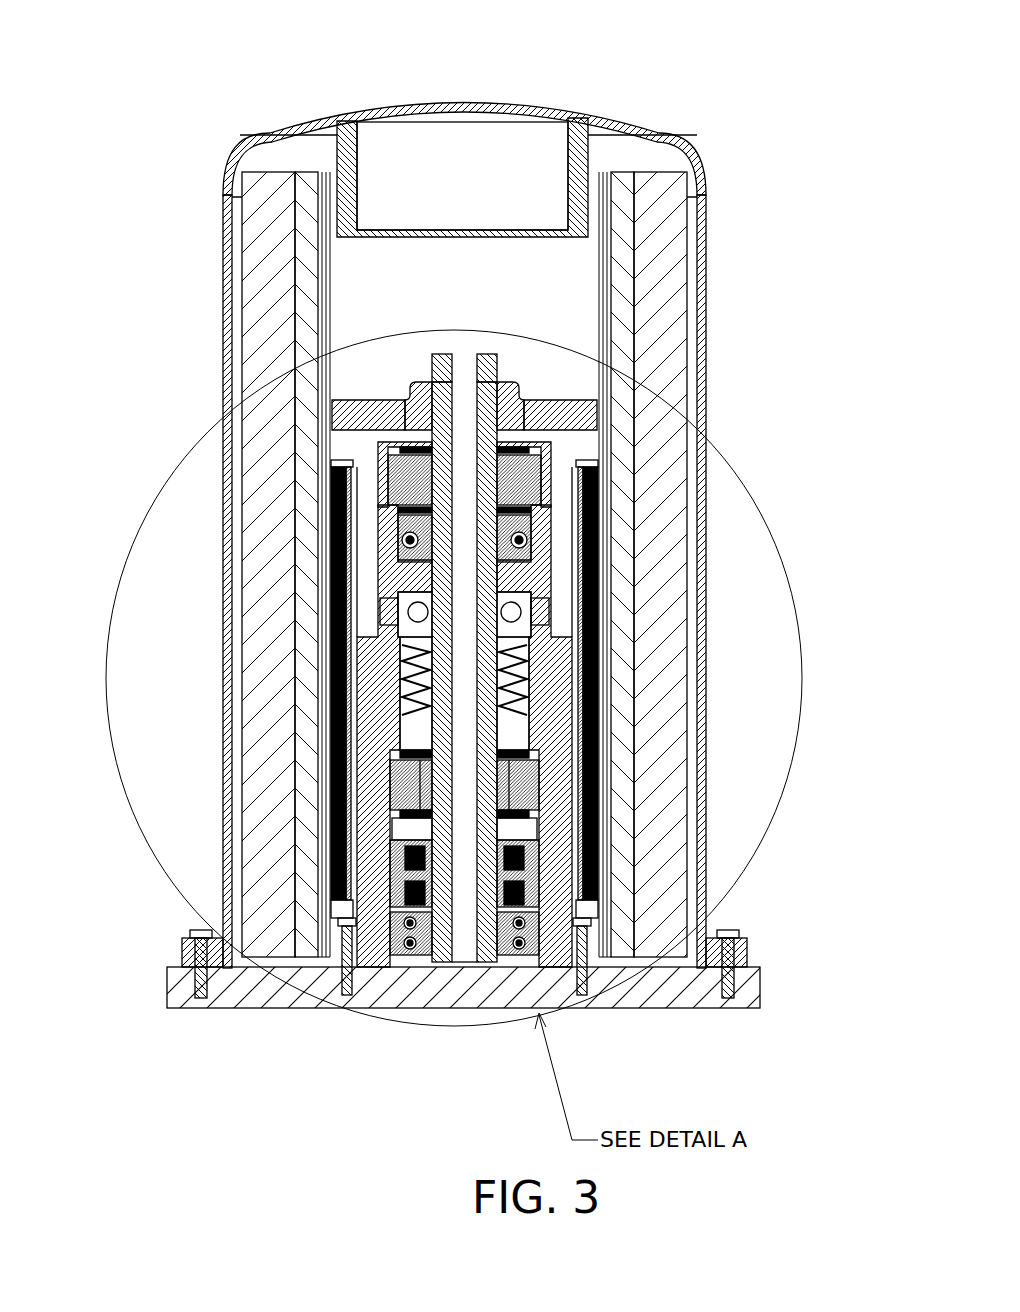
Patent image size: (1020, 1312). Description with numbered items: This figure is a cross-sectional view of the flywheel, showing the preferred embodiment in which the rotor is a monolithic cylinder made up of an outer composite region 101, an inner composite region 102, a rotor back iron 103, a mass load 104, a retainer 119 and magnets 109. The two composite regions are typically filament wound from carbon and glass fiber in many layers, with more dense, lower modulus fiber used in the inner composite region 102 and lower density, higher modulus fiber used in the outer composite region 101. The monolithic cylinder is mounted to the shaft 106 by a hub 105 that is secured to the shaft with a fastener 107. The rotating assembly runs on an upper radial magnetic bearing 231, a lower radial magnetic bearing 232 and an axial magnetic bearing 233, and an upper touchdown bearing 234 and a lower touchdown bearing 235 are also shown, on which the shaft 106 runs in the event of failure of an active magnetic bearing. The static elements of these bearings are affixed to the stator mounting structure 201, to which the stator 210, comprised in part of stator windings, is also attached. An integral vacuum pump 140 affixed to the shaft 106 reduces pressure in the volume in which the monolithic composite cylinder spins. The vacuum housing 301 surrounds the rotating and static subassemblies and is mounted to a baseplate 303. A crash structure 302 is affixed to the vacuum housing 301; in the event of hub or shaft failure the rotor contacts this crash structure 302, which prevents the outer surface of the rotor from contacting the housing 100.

The housing 100 is at (696, 210).
The outer composite region 101 is at (663, 268).
The inner composite region 102 is at (633, 345).
The rotor back iron 103 is at (615, 397).
The mass load 104 is at (615, 428).
The hub 105 is at (344, 414).
The shaft 106 is at (425, 573).
The fastener 107 is at (424, 365).
The magnets 109 is at (608, 507).
The retainer 119 is at (613, 920).
The vacuum pump 140 is at (402, 677).
The stator mounting structure 201 is at (558, 680).
The stator 210 is at (608, 590).
The upper radial magnetic bearing 231 is at (395, 477).
The lower radial magnetic bearing 232 is at (395, 777).
The axial magnetic bearing 233 is at (395, 850).
The upper touchdown bearing 234 is at (397, 535).
The lower touchdown bearing 235 is at (397, 930).
The vacuum housing 301 is at (696, 152).
The crash structure 302 is at (582, 118).
The baseplate 303 is at (766, 964).